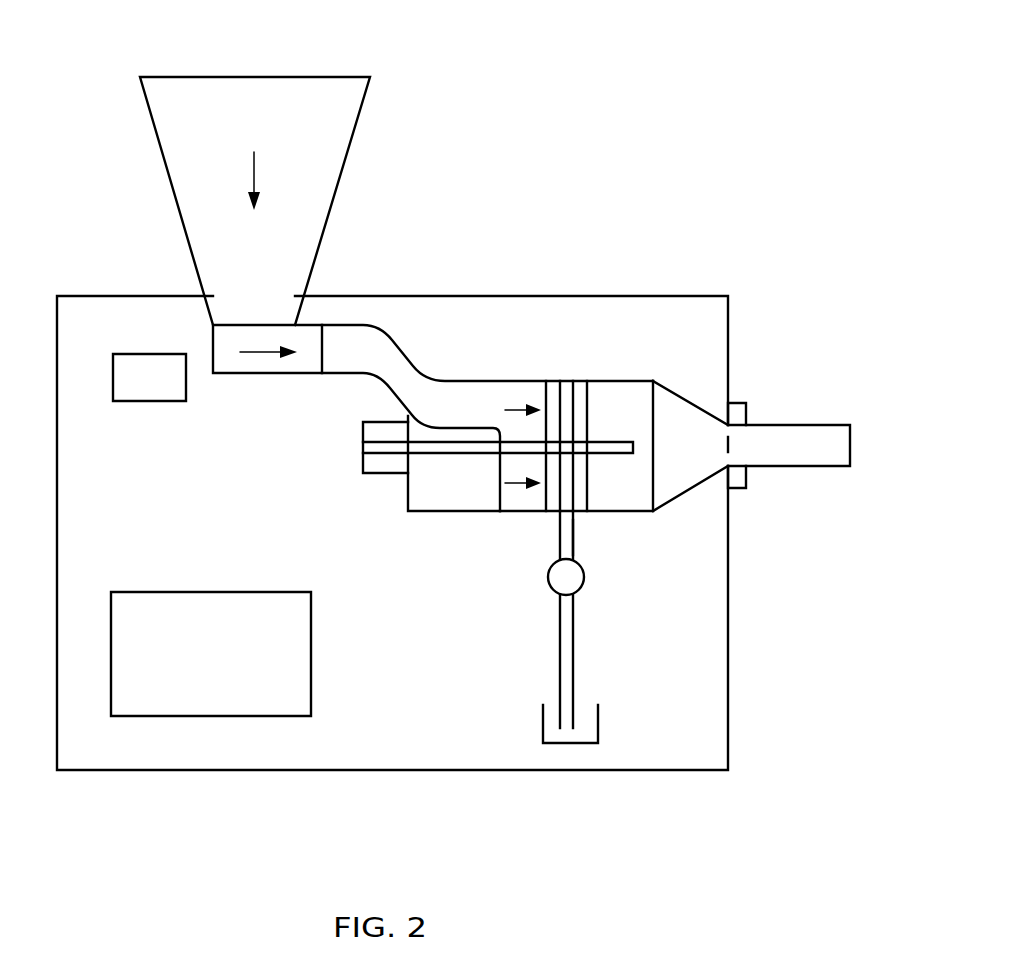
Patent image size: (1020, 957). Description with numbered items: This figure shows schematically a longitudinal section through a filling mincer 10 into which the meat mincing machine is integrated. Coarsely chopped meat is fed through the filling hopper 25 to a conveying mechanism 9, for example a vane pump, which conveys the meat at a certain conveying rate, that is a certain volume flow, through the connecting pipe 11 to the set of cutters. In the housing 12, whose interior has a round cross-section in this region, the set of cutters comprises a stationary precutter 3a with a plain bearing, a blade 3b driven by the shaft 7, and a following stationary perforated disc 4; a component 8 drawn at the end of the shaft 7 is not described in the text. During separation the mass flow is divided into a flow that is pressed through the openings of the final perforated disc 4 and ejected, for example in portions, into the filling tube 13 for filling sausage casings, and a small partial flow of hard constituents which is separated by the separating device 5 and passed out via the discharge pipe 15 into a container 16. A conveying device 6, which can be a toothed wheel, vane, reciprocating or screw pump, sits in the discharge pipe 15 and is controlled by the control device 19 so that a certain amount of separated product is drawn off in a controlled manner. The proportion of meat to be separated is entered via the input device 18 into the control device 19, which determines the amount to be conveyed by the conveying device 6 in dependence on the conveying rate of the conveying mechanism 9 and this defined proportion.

The filling mincer 10 is at (646, 92).
The filling hopper 25 is at (355, 134).
The conveying mechanism 9 is at (247, 373).
The connecting pipe 11 is at (417, 354).
The drive / conveyor shaft bearing 8 is at (378, 477).
The shaft 7 is at (440, 452).
The housing 12 is at (523, 514).
The filling tube 13 is at (820, 425).
The stationary precutter 3a is at (547, 380).
The blade 3b is at (565, 380).
The stationary perforated disc 4 is at (582, 380).
The separating device 5 is at (560, 517).
The conveying device 6 is at (585, 576).
The discharge pipe 15 is at (575, 535).
The container 16 is at (598, 722).
The input device 18 is at (311, 695).
The control device 19 is at (136, 401).